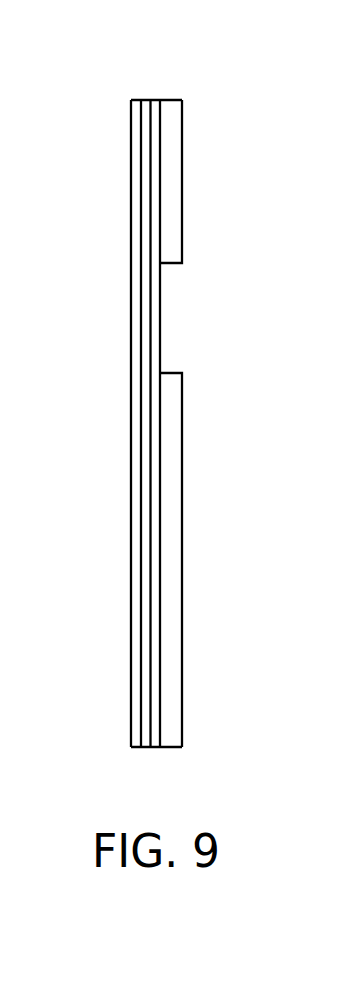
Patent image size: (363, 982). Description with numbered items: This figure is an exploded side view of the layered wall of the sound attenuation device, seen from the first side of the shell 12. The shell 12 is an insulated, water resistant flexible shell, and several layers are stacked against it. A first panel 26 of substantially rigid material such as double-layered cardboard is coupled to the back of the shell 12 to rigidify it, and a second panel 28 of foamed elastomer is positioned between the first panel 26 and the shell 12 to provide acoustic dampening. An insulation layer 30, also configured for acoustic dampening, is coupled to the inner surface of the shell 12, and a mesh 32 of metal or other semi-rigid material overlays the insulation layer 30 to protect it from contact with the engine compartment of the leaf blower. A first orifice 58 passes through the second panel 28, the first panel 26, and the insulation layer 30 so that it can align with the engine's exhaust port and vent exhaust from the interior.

The shell 12 is at (144, 373).
The first panel 26 is at (153, 100).
The second panel 28 is at (133, 100).
The insulation layer 30 is at (261, 423).
The mesh 32 is at (182, 497).
The first orifice 58 is at (170, 310).